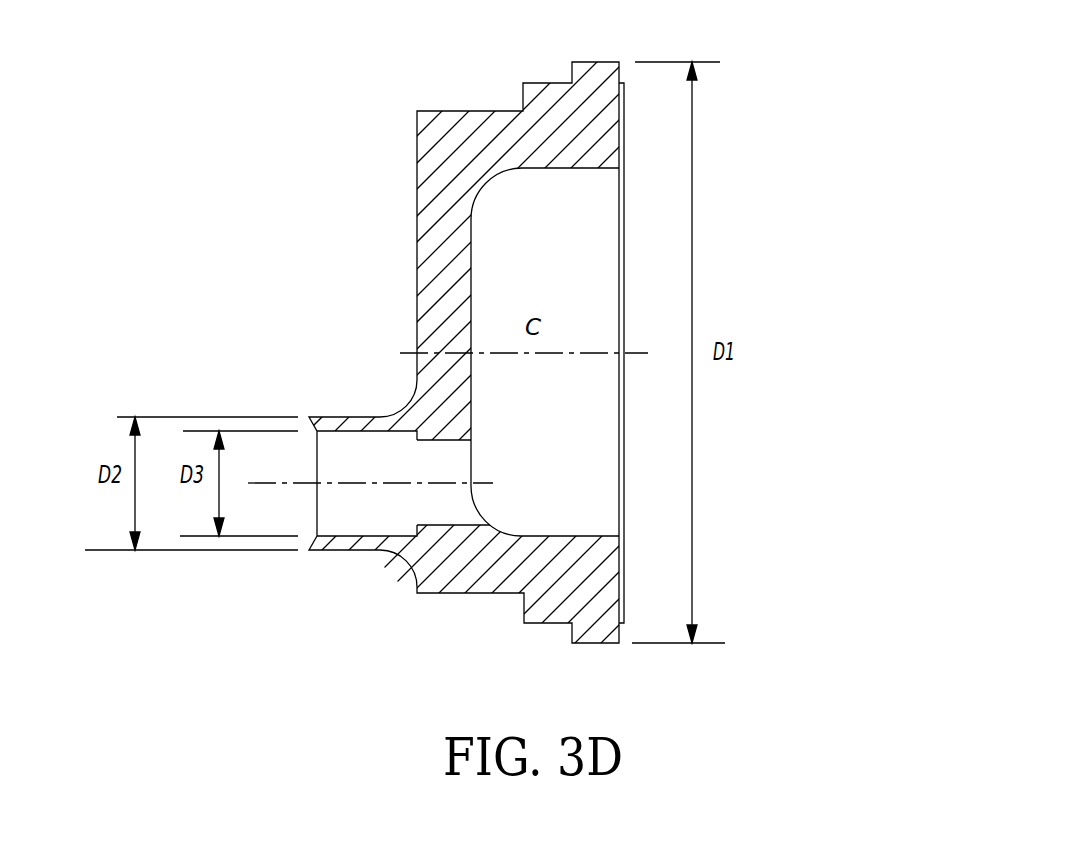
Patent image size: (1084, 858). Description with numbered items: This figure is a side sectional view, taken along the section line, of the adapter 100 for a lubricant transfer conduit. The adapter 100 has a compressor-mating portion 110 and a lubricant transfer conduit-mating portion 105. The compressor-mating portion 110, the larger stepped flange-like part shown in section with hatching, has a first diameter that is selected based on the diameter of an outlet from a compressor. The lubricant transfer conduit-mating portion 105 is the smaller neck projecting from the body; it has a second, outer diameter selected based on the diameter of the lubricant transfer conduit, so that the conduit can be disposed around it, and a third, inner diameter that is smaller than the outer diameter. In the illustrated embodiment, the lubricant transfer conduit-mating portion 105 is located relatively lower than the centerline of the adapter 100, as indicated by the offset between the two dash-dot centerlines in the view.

The adapter 100 is at (542, 350).
The lubricant transfer conduit-mating portion 105 is at (348, 380).
The compressor-mating portion 110 is at (464, 78).